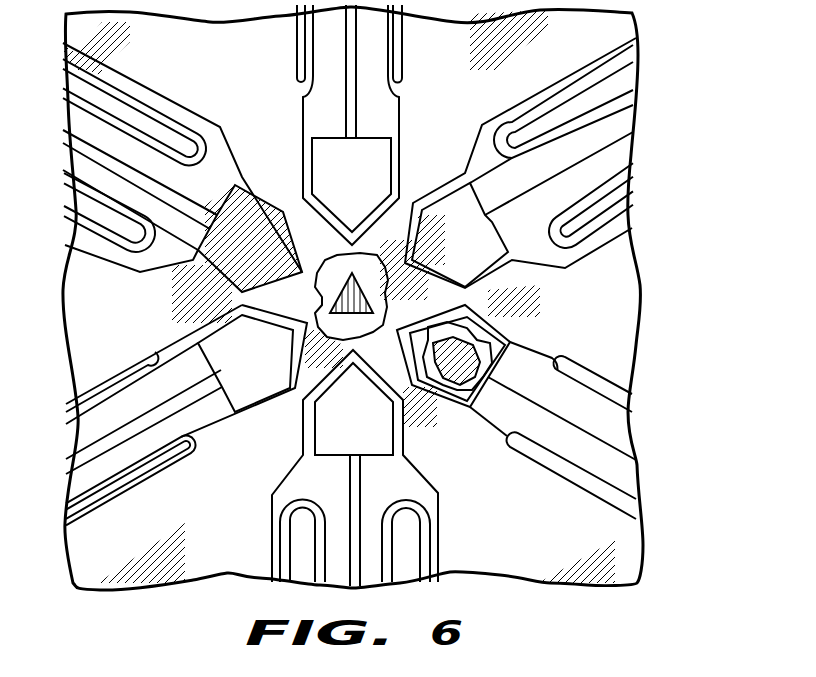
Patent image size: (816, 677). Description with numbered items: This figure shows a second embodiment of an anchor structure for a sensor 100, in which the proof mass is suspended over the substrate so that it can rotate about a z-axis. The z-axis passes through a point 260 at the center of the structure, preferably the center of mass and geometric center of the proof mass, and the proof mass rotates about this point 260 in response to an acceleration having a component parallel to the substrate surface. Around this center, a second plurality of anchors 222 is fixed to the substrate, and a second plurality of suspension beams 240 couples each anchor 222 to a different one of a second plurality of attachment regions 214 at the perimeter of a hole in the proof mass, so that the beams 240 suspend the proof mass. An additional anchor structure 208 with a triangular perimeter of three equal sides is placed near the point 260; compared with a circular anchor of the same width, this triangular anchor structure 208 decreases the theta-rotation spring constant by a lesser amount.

The sensor 100 is at (200, 639).
The additional anchor structure 208 is at (322, 295).
The second plurality of attachment regions 214 is at (563, 355).
The second plurality of anchors 222 is at (469, 402).
The second plurality of suspension beams 240 is at (628, 455).
The point 260 is at (363, 263).